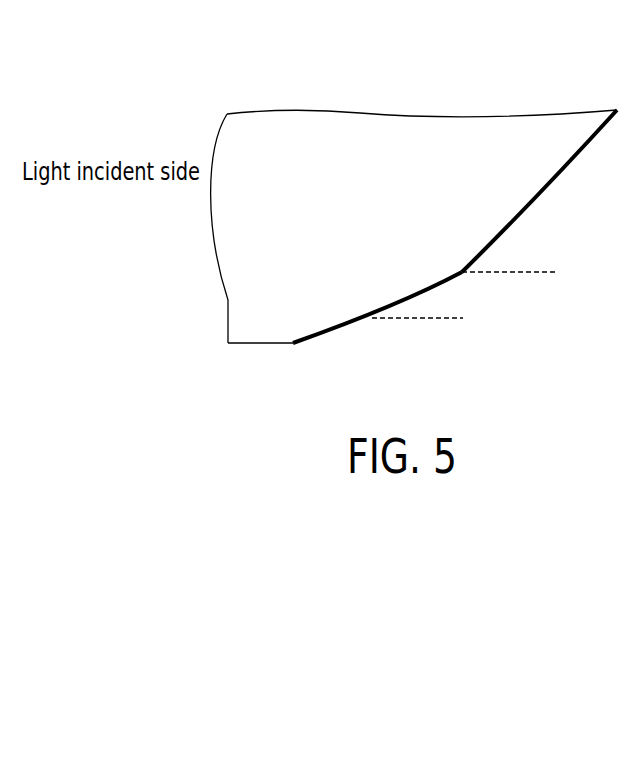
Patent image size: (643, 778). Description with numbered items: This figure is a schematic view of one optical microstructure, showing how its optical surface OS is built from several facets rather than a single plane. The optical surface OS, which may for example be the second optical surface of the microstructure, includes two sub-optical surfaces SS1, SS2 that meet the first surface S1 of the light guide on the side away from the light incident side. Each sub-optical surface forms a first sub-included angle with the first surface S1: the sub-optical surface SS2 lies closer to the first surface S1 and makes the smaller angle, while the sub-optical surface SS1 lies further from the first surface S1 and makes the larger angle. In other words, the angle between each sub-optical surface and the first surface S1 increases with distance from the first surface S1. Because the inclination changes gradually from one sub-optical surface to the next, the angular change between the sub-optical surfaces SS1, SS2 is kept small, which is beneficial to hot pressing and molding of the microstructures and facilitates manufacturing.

The optical surface OS is at (439, 173).
The sub-optical surface SS1 is at (534, 199).
The sub-optical surface SS2 is at (412, 296).
The first surface S1 is at (260, 346).